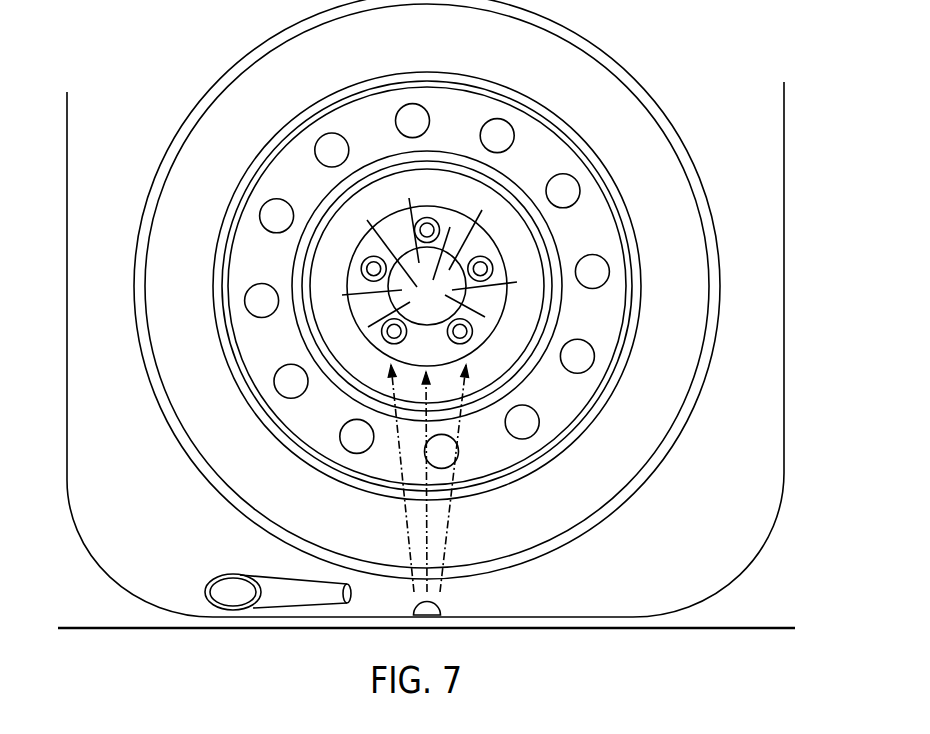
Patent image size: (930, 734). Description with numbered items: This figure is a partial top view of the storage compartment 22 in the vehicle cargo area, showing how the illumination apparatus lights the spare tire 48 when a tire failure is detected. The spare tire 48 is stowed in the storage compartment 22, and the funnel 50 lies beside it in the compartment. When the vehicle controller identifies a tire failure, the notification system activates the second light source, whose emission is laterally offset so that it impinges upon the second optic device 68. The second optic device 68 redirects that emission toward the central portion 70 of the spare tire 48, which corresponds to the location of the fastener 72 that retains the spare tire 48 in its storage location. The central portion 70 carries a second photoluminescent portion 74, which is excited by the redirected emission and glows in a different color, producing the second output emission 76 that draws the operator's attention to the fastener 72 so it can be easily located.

The storage compartment 22 is at (265, 165).
The spare tire 48 is at (623, 118).
The funnel 50 is at (293, 598).
The second optic device 68 is at (445, 603).
The central portion 70 is at (393, 295).
The fastener 72 is at (442, 293).
The second photoluminescent portion 74 is at (410, 247).
The second output emission 76 is at (538, 162).